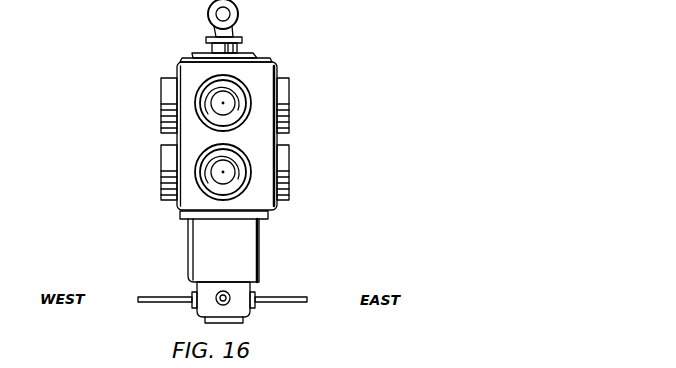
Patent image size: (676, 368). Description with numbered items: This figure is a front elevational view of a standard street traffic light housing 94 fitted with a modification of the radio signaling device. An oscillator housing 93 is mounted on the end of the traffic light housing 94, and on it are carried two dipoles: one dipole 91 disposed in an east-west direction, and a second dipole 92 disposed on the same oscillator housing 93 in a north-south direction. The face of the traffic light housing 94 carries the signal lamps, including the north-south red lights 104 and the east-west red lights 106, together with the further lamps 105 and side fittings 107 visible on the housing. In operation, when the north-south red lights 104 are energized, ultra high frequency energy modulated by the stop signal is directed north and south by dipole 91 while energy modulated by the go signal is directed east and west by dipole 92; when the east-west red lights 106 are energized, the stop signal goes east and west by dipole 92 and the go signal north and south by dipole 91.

The dipole 91 is at (158, 297).
The second dipole 92 is at (220, 296).
The oscillator housing 93 is at (251, 254).
The traffic light housing 94 is at (260, 77).
The north-south red lights 104 is at (200, 88).
The lower lens 105 is at (196, 168).
The east-west red lights 106 is at (163, 118).
The lower side knobs 107 is at (163, 182).